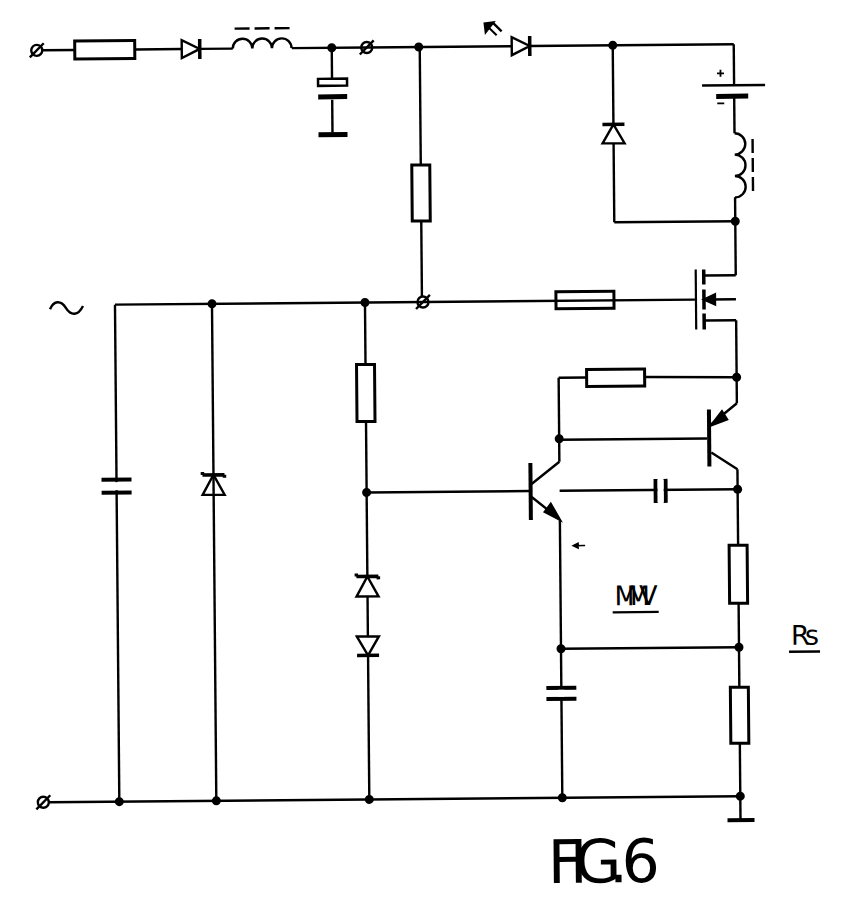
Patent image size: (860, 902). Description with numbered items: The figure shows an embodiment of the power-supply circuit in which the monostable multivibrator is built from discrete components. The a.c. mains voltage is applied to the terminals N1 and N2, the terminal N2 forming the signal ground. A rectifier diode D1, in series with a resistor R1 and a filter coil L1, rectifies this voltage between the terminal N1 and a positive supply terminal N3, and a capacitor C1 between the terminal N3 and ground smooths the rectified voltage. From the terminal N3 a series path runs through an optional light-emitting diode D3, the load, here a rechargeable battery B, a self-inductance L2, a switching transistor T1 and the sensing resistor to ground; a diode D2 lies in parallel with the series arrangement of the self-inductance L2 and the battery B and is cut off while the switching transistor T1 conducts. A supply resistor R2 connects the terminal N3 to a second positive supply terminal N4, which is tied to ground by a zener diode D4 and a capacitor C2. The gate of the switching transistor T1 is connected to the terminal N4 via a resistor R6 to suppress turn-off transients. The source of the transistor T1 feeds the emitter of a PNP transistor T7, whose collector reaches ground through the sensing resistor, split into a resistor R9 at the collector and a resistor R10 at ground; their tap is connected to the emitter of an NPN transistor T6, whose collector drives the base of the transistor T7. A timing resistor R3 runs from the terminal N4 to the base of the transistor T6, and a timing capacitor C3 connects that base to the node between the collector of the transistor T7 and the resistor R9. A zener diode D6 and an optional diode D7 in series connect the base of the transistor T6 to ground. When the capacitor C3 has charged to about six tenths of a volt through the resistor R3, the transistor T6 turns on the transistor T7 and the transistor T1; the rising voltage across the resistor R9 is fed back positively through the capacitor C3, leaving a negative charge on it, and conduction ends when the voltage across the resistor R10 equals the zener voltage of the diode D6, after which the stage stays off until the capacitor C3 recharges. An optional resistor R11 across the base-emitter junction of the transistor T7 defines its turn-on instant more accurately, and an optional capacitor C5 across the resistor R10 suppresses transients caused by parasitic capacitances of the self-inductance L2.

The terminal N1 is at (39, 29).
The resistor R1 is at (104, 30).
The rectifier diode D1 is at (189, 31).
The filter coil L1 is at (261, 24).
The capacitor C1 is at (350, 91).
The positive supply terminal N3 is at (370, 27).
The light-emitting diode D3 is at (508, 28).
The rechargeable battery B is at (733, 77).
The self-inductance L2 is at (759, 165).
The diode D2 is at (595, 136).
The supply resistor R2 is at (437, 193).
The positive supply terminal N4 is at (439, 286).
The resistor R6 is at (585, 284).
The switching transistor T1 is at (733, 299).
The resistor R11 is at (615, 362).
The timing resistor R3 is at (381, 390).
The PNP transistor T7 is at (739, 436).
The NPN transistor T6 is at (529, 480).
The timing capacitor C3 is at (671, 510).
The capacitor C2 is at (132, 489).
The zener diode D4 is at (230, 487).
The zener diode D6 is at (385, 588).
The diode D7 is at (386, 649).
The capacitor C5 is at (575, 700).
The resistor R9 is at (754, 574).
The resistor R10 is at (760, 715).
The terminal N2 is at (48, 781).